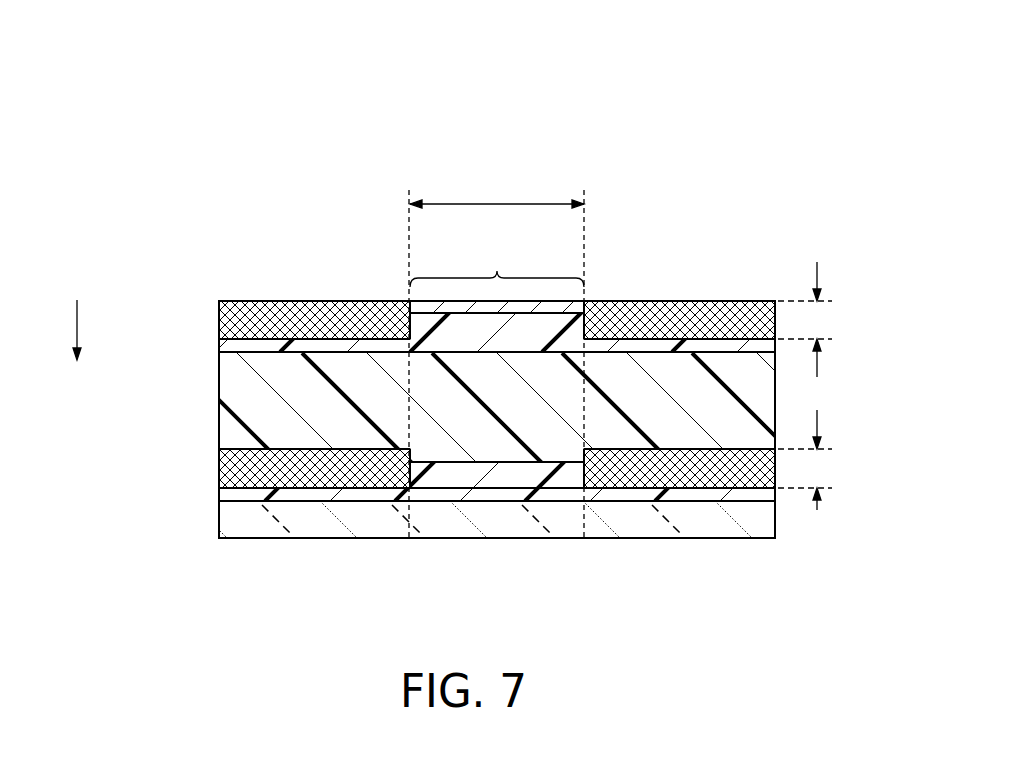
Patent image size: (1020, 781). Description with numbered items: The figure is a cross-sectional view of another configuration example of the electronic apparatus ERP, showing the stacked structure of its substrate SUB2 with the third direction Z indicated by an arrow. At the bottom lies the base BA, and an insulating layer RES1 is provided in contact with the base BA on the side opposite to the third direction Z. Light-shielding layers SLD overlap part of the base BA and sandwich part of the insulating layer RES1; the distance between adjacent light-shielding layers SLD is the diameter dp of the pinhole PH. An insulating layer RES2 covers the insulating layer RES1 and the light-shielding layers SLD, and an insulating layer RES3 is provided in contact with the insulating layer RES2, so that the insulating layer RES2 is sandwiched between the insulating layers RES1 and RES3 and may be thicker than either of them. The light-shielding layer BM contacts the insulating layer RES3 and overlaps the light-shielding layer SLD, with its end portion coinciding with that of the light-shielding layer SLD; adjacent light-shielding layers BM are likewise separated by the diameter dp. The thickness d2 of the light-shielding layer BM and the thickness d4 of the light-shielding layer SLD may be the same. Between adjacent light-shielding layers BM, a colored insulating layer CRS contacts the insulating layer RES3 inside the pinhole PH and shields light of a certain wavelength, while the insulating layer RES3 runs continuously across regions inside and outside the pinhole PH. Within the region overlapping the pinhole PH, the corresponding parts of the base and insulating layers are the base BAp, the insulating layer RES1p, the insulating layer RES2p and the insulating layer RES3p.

The electronic apparatus ERP is at (704, 99).
The substrate SUB2 is at (778, 211).
The light-shielding layer BM is at (237, 316).
The light-shielding layer SLD is at (318, 478).
The insulating layer RES3 is at (296, 344).
The insulating layer RES3p is at (412, 325).
The insulating layer RES2 is at (227, 397).
The insulating layer RES2p is at (500, 440).
The insulating layer RES1 is at (718, 493).
The insulating layer RES1p is at (443, 472).
The base BA is at (260, 536).
The base BAp is at (551, 536).
The insulating layer CRS is at (586, 303).
The pinhole PH is at (497, 266).
The diameter of the pinhole dp is at (497, 188).
The thickness of the light-shielding layer BM d2 is at (818, 319).
The thickness of the light-shielding layer SLD d4 is at (818, 460).
The third direction Z is at (76, 349).